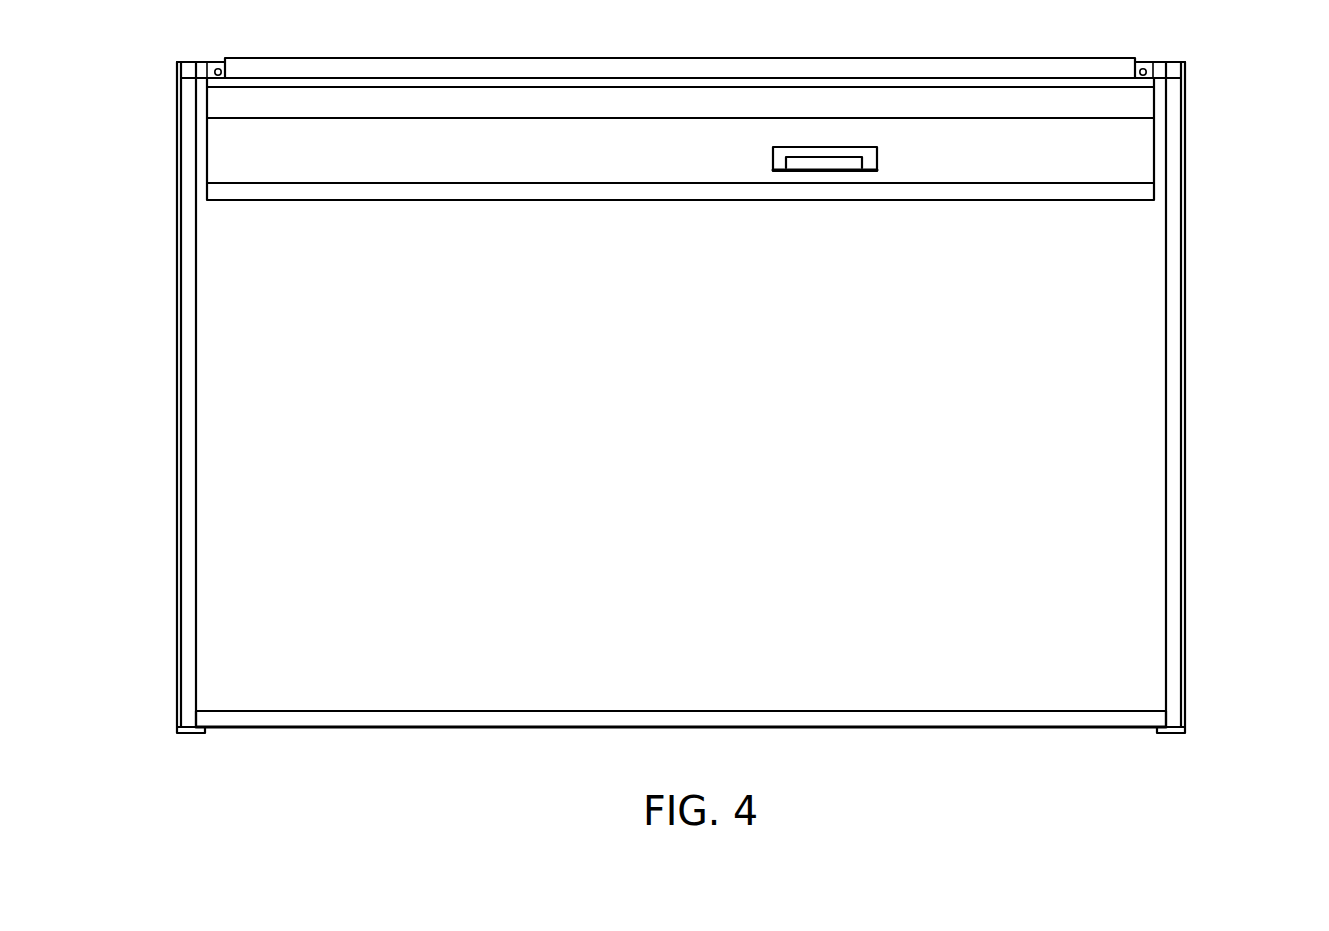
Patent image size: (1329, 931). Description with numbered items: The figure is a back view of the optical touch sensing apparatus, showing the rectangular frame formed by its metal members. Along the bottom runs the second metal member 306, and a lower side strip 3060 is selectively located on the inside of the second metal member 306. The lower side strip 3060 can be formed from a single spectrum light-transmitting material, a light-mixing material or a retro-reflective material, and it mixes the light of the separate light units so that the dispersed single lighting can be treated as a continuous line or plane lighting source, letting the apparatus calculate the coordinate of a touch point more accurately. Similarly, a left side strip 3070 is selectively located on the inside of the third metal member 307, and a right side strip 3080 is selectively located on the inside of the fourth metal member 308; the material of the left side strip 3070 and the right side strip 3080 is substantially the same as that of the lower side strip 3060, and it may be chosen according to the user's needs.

The second metal member 306 is at (708, 727).
The lower side strip 3060 is at (540, 718).
The third metal member 307 is at (1183, 520).
The left side strip 3070 is at (1173, 385).
The fourth metal member 308 is at (178, 520).
The right side strip 3080 is at (188, 385).